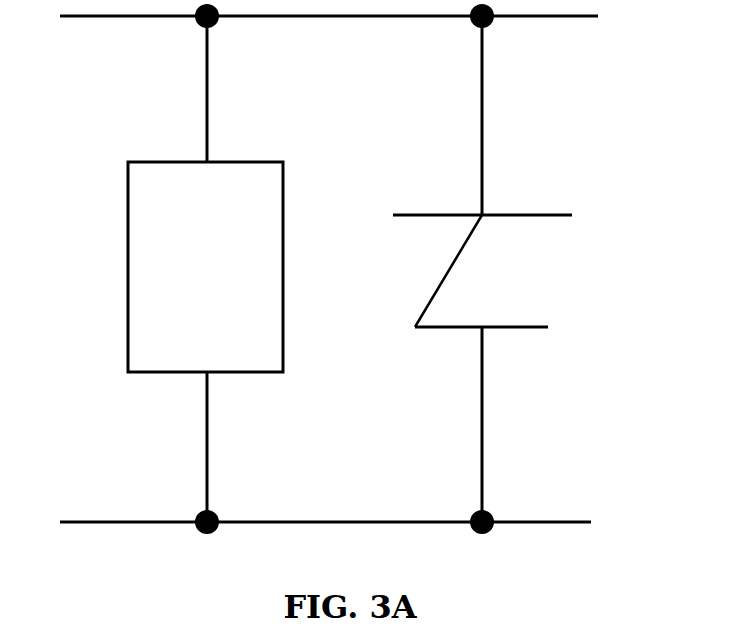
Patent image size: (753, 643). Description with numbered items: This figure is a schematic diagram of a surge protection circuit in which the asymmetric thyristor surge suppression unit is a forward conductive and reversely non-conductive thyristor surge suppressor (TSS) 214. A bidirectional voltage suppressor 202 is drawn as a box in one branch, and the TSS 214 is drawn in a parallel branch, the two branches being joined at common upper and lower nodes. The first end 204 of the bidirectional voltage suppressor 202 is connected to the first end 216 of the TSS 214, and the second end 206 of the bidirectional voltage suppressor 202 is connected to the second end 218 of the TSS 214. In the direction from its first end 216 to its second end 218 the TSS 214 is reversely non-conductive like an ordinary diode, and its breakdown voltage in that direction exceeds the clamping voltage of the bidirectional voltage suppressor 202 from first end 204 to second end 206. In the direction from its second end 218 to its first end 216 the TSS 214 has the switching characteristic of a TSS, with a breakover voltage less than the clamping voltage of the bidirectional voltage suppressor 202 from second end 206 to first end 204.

The bidirectional voltage suppressor 202 is at (283, 355).
The first end of the bidirectional voltage suppressor 204 is at (207, 61).
The second end of the bidirectional voltage suppressor 206 is at (207, 453).
The forward conductive and reversely non-conductive thyristor surge suppressor (TSS) 214 is at (532, 327).
The first end of the TSS 216 is at (482, 83).
The second end of the TSS 218 is at (482, 409).